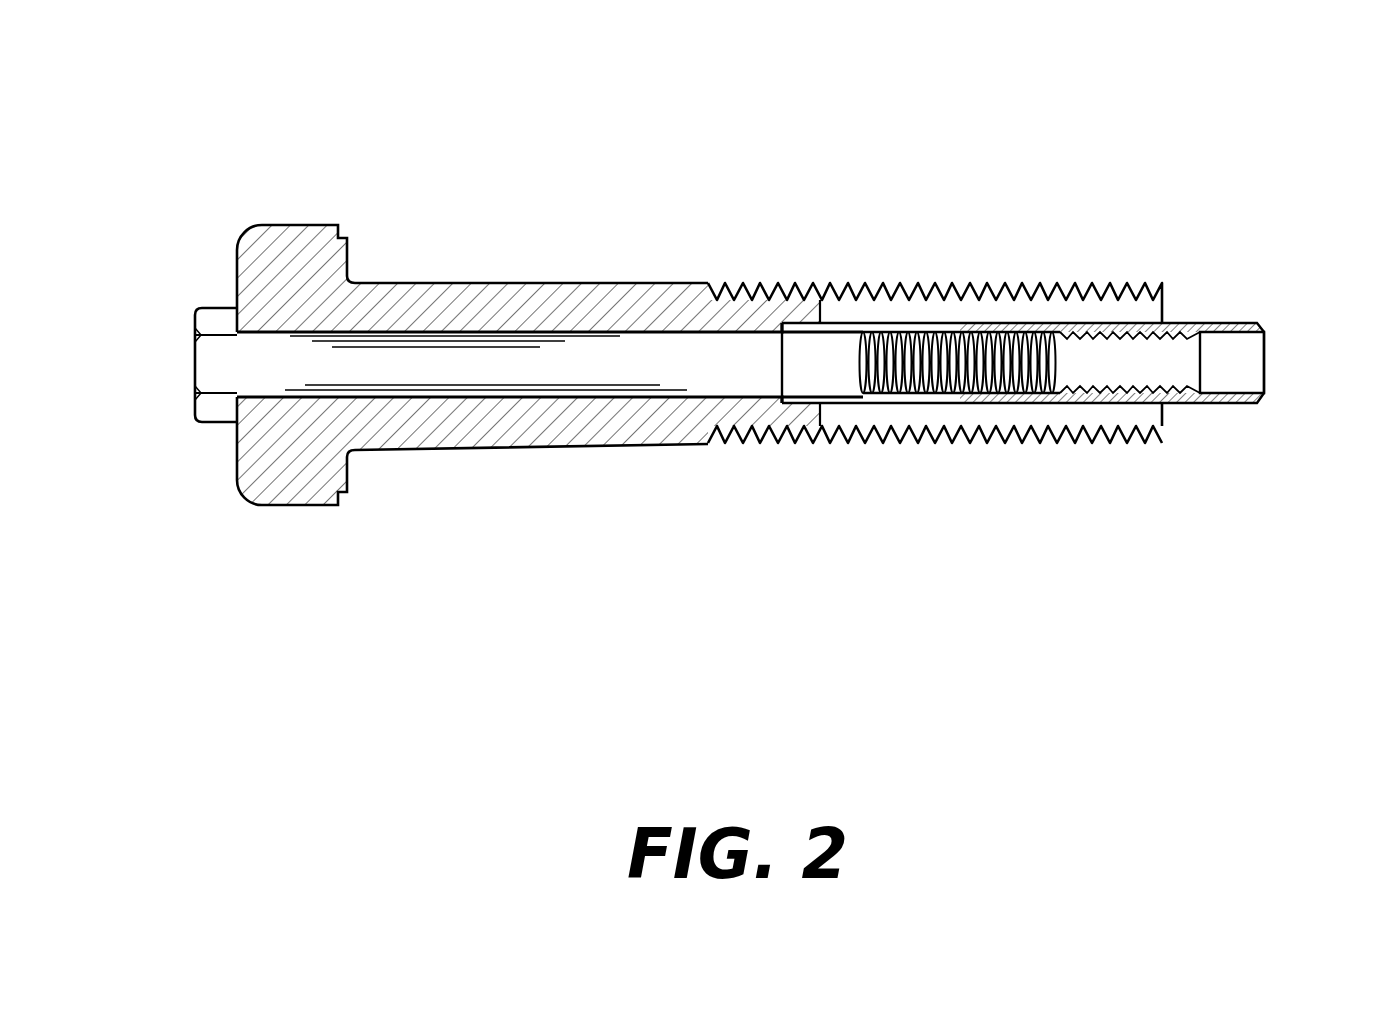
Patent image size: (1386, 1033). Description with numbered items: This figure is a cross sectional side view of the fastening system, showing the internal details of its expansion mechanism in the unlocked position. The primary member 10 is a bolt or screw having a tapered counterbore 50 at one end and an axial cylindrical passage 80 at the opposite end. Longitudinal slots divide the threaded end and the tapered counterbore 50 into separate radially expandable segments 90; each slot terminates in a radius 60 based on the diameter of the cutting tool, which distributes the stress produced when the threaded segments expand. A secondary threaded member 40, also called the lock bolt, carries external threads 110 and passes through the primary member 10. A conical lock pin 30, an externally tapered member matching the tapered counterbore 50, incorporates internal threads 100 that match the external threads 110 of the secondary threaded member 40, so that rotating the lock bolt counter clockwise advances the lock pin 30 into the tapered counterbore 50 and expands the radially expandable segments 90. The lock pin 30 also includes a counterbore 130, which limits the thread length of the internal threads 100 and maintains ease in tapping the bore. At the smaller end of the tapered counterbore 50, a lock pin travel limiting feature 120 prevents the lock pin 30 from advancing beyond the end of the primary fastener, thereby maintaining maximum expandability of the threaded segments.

The primary member 10 is at (425, 282).
The lock pin 30 is at (1228, 323).
The secondary threaded member 40 is at (195, 335).
The tapered counterbore 50 is at (793, 428).
The radius 60 is at (843, 300).
The axial cylindrical passage 80 is at (643, 331).
The radially expandable segments 90 is at (1163, 413).
The internal threads 100 is at (1105, 332).
The external threads 110 is at (903, 403).
The lock pin travel limiting feature 120 is at (850, 403).
The counterbore 130 is at (1222, 393).